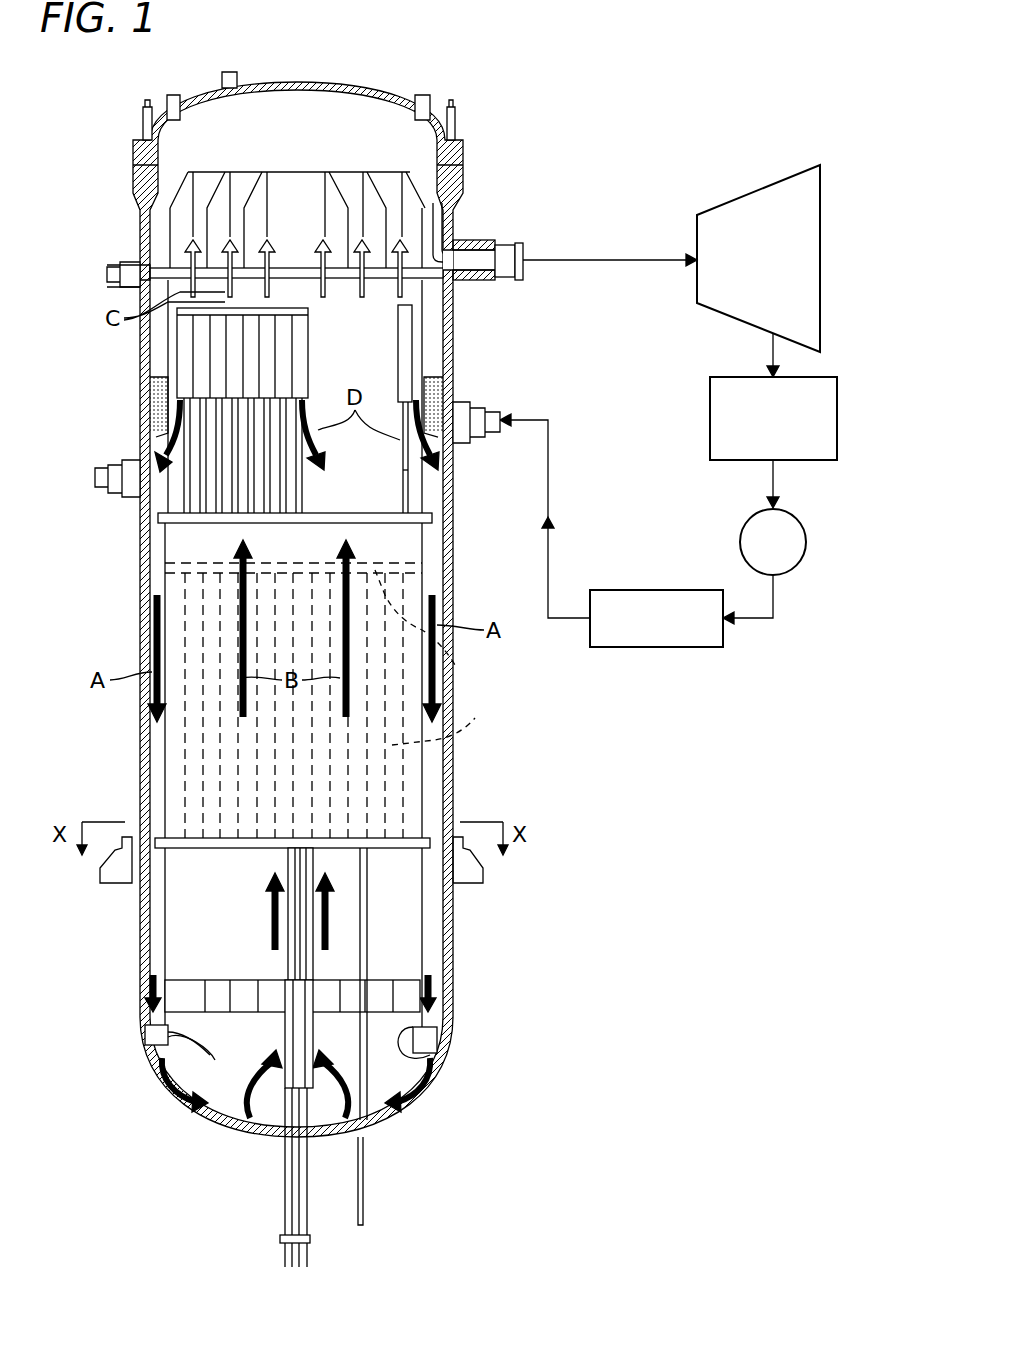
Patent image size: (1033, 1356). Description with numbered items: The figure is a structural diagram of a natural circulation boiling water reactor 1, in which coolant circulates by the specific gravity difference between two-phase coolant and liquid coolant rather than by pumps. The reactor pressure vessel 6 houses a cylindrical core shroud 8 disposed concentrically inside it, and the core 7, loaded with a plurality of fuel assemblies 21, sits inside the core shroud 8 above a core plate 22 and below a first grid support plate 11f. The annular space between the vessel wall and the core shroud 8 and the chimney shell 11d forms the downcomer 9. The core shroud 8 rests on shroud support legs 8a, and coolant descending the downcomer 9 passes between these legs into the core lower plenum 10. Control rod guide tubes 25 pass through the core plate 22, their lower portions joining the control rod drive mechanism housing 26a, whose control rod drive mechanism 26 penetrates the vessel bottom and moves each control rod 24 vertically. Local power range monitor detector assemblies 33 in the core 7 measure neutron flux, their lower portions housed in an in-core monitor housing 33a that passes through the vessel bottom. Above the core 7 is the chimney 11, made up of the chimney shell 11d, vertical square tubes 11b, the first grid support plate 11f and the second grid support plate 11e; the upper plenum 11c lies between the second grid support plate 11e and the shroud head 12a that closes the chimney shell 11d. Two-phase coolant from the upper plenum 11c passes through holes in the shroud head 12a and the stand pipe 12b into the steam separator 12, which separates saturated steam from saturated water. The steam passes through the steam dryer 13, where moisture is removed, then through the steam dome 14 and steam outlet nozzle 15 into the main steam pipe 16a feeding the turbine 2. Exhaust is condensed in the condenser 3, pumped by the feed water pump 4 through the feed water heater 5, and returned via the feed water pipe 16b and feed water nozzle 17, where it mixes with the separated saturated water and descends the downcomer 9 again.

The natural circulation boiling water reactor 1 is at (477, 108).
The turbine 2 is at (757, 190).
The condenser 3 is at (812, 462).
The feed water pump 4 is at (793, 570).
The feed water heater 5 is at (652, 590).
The reactor pressure vessel 6 is at (450, 522).
The core 7 is at (410, 914).
The core shroud 8 is at (422, 893).
The shroud support legs 8a is at (432, 1058).
The downcomer 9 is at (152, 800).
The core lower plenum 10 is at (148, 1052).
The chimney 11 is at (522, 665).
The square tube 11b is at (459, 723).
The upper plenum 11c is at (182, 545).
The chimney shell 11d is at (422, 770).
The second grid support plate 11e is at (450, 633).
The first grid support plate 11f is at (388, 845).
The steam separator 12 is at (408, 360).
The shroud head 12a is at (150, 520).
The stand pipe 12b is at (408, 472).
The steam dryer 13 is at (412, 172).
The steam dome 14 is at (368, 130).
The steam outlet nozzle 15 is at (488, 280).
The main steam pipe 16a is at (632, 259).
The feed water pipe 16b is at (549, 538).
The feed water nozzle 17 is at (472, 405).
The fuel assemblies 21 is at (290, 970).
The core plate 22 is at (425, 990).
The control rod 24 is at (290, 912).
The control rod guide tube 25 is at (195, 1120).
The control rod drive mechanism 26 is at (310, 1240).
The control rod drive mechanism housing 26a is at (285, 1210).
The local power range monitor detector assembly 33 is at (367, 940).
The in-core monitor housing 33a is at (364, 1182).